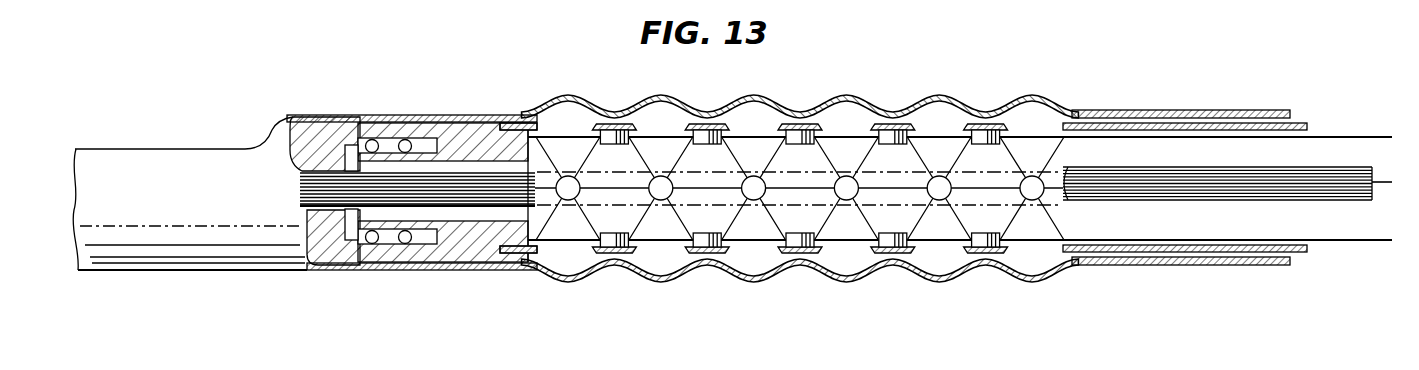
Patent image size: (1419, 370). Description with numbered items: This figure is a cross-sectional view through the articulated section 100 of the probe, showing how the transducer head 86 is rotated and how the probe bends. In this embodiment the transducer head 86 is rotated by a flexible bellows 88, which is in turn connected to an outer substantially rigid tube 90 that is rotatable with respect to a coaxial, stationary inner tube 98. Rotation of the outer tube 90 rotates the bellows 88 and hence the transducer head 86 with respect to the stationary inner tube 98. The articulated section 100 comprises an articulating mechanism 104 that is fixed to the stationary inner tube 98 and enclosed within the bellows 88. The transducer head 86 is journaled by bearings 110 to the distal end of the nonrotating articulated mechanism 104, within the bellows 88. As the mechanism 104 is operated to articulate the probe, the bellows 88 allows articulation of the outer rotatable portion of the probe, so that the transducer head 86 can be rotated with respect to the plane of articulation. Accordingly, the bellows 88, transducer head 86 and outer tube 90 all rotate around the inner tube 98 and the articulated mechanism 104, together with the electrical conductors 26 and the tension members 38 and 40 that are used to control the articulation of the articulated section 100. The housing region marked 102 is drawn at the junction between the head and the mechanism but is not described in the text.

The articulated section 100 is at (878, 78).
The transducer head 86 is at (232, 213).
The housing 102 is at (478, 246).
The bearings 110 is at (347, 236).
The inner tube 98 is at (1305, 237).
The outer tube 90 is at (1257, 265).
The electrical conductors 26 is at (448, 178).
The tension members 38 is at (1360, 135).
The tension member 40 is at (1377, 190).
The articulating mechanism 104 is at (661, 262).
The bellows 88 is at (773, 277).